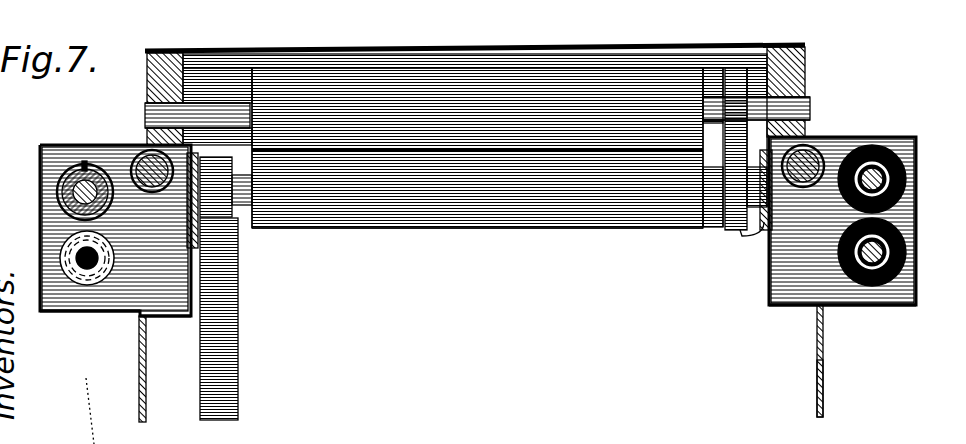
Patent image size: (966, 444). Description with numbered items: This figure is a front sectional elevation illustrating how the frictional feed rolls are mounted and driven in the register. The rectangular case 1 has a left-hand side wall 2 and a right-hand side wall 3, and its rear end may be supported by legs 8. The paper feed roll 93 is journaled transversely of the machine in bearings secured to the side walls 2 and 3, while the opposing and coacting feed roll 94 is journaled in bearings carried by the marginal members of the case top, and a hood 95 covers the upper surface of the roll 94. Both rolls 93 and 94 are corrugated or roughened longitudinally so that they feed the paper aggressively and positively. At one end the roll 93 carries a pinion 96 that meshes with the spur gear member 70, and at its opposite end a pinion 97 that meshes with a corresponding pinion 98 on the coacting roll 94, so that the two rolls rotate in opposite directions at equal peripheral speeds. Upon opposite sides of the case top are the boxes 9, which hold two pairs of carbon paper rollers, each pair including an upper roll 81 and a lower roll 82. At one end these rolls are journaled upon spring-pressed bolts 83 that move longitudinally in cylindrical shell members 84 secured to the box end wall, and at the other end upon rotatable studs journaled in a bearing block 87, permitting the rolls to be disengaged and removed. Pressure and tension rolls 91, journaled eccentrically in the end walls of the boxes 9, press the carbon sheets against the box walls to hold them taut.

The rectangular case 1 is at (826, 335).
The left-hand side wall 2 is at (826, 386).
The right-hand side wall 3 is at (139, 351).
The legs 8 is at (38, 167).
The boxes 9 is at (42, 190).
The spur gear member 70 is at (218, 348).
The upper rolls 81 is at (908, 169).
The lower rolls 82 is at (896, 252).
The spring-pressed bolts 83 is at (89, 277).
The cylindrical shell members 84 is at (103, 286).
The bearing block 87 is at (62, 297).
The pressure and tension rolls 91 is at (135, 148).
The paper feed roll 93 is at (460, 168).
The coacting feed roll 94 is at (537, 82).
The hood 95 is at (622, 47).
The pinion 96 is at (217, 173).
The pinion 97 is at (757, 236).
The pinion 98 is at (808, 58).